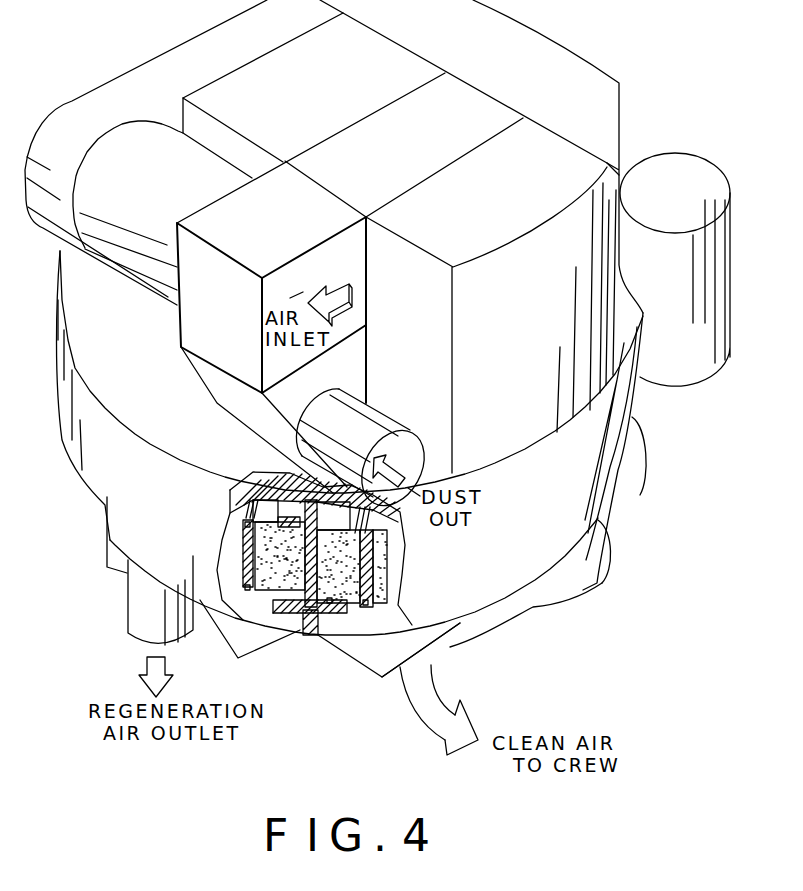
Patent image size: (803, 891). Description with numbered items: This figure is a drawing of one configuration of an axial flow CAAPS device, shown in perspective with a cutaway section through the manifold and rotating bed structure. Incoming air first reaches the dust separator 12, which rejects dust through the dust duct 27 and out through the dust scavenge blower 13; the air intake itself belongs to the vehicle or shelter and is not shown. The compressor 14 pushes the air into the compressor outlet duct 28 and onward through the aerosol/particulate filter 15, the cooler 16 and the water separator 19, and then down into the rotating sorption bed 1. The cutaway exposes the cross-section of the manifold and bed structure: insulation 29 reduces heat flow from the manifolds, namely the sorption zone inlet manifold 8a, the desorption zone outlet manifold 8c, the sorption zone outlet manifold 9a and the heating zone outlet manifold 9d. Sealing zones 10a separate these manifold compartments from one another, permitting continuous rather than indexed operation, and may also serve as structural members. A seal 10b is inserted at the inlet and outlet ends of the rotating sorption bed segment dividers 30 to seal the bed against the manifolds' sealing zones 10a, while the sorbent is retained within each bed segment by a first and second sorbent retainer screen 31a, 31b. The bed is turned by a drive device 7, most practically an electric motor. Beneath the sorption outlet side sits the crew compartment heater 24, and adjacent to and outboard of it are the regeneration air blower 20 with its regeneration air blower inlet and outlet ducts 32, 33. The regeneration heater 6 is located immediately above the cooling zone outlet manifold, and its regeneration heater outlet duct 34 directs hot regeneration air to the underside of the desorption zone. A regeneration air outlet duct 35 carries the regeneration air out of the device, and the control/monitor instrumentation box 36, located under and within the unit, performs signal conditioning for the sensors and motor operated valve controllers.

The rotating sorption bed 1 is at (340, 583).
The regeneration heater 6 is at (613, 158).
The drive device 7 is at (683, 291).
The sorption zone inlet manifold 8a is at (366, 548).
The desorption zone outlet manifold 8c is at (253, 502).
The sorption zone outlet manifold 9a is at (343, 625).
The heating zone outlet manifold 9d is at (257, 615).
The sealing zones 10a is at (310, 637).
The seal 10b is at (312, 548).
The dust separator 12 is at (225, 314).
The dust scavenge blower 13 is at (357, 437).
The compressor 14 is at (170, 196).
The aerosol/particulate filter 15 is at (330, 93).
The cooler 16 is at (415, 158).
The water separator 19 is at (500, 206).
The regeneration air blower 20 is at (617, 522).
The crew compartment heater 24 is at (407, 640).
The dust duct 27 is at (228, 392).
The compressor outlet duct 28 is at (82, 114).
The insulation 29 is at (277, 473).
The rotating sorption bed segment dividers 30 is at (240, 527).
The first sorbent retainer screen 31a is at (253, 518).
The second sorbent retainer screen 31b is at (230, 570).
The regeneration air blower inlet duct 32 is at (540, 607).
The regeneration air blower outlet duct 33 is at (633, 460).
The regeneration heater outlet duct 34 is at (491, 58).
The regeneration air outlet duct 35 is at (150, 607).
The control/monitor instrumentation box 36 is at (110, 568).